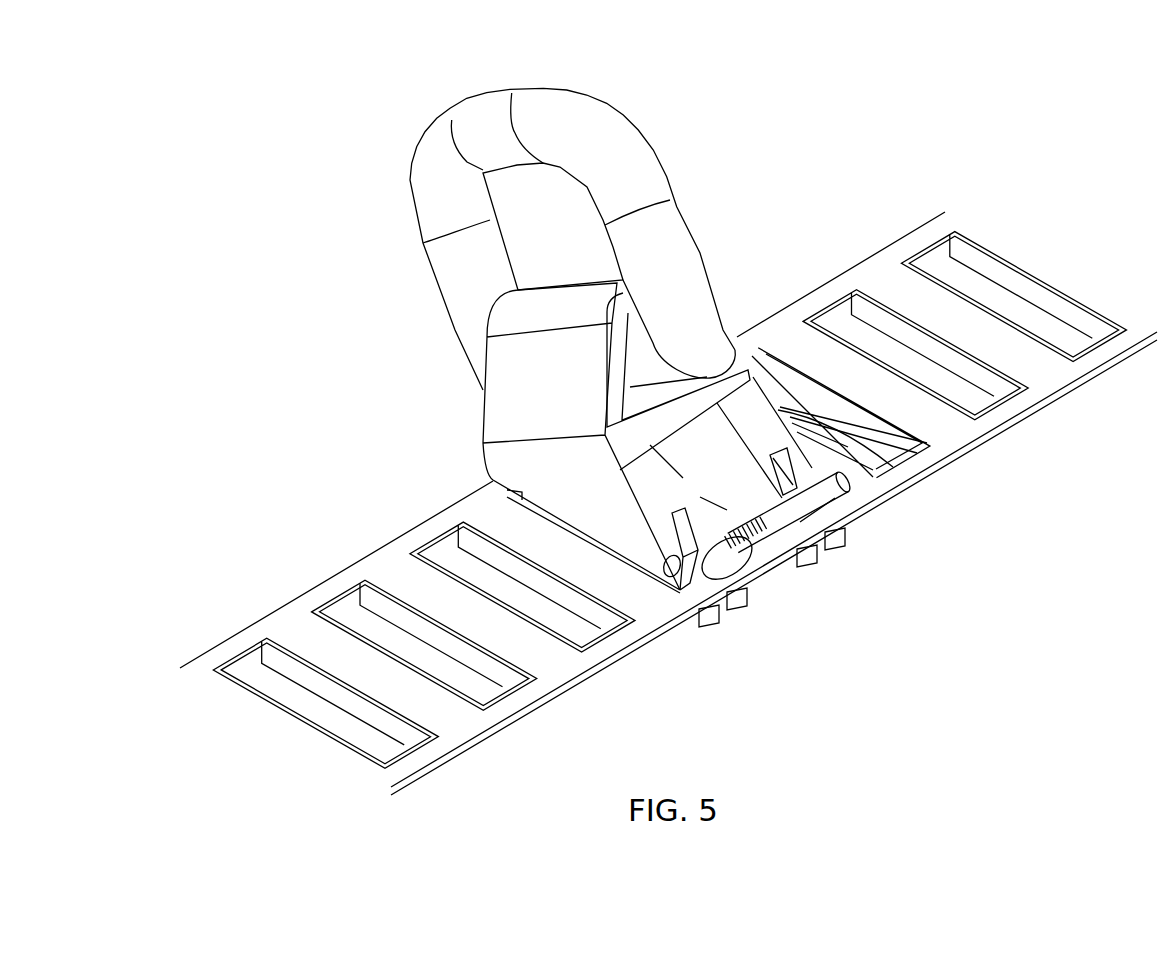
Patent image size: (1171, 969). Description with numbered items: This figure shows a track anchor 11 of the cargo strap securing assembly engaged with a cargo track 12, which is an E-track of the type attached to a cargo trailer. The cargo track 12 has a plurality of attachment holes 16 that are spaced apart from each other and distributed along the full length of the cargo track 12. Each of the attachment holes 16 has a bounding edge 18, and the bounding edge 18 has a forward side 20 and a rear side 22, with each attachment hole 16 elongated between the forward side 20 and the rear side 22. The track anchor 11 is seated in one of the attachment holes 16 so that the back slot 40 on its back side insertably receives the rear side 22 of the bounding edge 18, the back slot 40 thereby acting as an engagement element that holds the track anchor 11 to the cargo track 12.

The back slot 40 is at (737, 157).
The attachment holes 16 is at (860, 342).
The cargo track 12 is at (388, 543).
The rear side 22 is at (350, 590).
The bounding edge 18 is at (317, 607).
The forward side 20 is at (507, 697).
The track anchor 11 is at (635, 538).